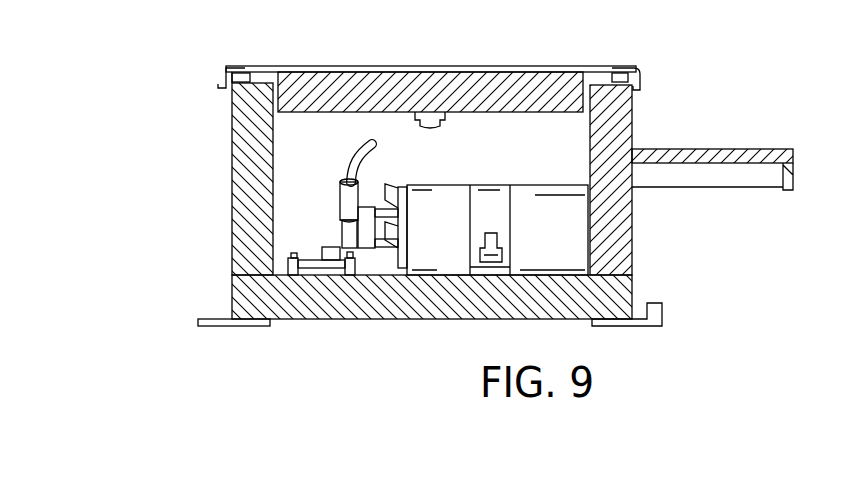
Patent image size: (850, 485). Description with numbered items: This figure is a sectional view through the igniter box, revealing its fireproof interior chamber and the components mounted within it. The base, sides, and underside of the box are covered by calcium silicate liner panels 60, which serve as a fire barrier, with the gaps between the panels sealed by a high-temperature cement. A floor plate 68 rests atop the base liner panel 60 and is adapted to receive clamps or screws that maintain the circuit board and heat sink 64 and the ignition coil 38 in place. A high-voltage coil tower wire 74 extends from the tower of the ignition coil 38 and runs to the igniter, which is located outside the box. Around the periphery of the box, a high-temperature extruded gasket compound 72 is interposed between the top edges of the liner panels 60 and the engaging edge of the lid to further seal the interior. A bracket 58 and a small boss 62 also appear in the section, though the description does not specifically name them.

The ignition coil 38 is at (556, 183).
The mounting bracket 58 is at (757, 153).
The calcium silicate liner panel 60 is at (533, 80).
The boss 62 is at (405, 111).
The circuit board and heat sink 64 is at (287, 262).
The floor plate 68 is at (632, 273).
The extruded gasket compound 72 is at (236, 76).
The high-voltage coil tower wire 74 is at (342, 190).